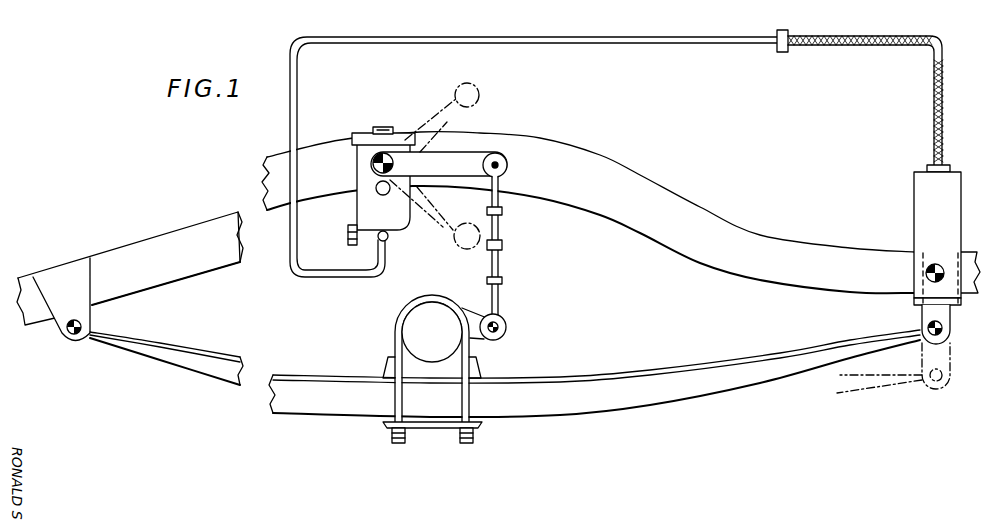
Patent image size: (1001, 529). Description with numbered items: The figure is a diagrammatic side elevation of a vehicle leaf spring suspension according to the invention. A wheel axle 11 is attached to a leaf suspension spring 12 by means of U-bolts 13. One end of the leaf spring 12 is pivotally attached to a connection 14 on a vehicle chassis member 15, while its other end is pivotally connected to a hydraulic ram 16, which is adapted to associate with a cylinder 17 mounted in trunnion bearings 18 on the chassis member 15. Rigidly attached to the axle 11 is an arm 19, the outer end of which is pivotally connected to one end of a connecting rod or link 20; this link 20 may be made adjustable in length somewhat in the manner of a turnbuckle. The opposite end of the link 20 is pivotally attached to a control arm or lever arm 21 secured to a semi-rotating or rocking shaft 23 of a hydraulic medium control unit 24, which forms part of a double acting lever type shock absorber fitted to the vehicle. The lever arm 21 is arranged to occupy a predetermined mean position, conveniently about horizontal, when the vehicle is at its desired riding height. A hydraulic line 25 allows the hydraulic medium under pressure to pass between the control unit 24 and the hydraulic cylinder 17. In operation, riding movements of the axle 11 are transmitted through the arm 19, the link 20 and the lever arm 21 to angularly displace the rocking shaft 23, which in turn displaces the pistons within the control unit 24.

The wheel axle 11 is at (423, 317).
The leaf suspension spring 12 is at (727, 378).
The U-bolts 13 is at (397, 357).
The connection 14 is at (73, 336).
The vehicle chassis member 15 is at (175, 245).
The hydraulic ram 16 is at (938, 372).
The cylinder 17 is at (942, 207).
The trunnion bearings 18 is at (941, 269).
The arm 19 is at (476, 338).
The connecting rod or link 20 is at (500, 280).
The control arm or lever arm 21 is at (461, 163).
The semi-rotating or rocking shaft 23 is at (378, 156).
The hydraulic medium control unit 24 is at (367, 198).
The hydraulic line 25 is at (810, 38).